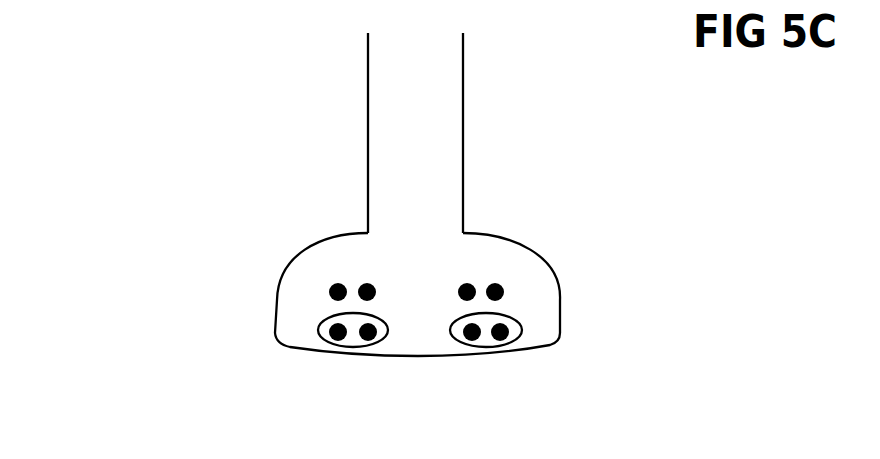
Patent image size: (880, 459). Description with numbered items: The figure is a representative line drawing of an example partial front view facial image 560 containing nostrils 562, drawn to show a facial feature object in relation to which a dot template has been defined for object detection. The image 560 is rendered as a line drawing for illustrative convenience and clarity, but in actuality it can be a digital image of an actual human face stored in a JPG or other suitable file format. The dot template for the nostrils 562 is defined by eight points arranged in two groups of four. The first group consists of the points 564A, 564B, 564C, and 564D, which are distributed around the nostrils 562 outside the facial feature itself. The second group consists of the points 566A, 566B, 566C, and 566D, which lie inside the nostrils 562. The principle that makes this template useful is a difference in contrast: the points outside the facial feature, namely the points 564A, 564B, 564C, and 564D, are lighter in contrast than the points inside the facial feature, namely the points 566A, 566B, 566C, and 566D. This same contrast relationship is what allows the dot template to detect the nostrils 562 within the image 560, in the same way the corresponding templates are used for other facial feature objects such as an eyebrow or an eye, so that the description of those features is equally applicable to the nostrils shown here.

The partial front view facial image 560 is at (208, 377).
The nostrils 562 is at (450, 331).
The point 564A is at (329, 292).
The point 564B is at (405, 257).
The point 564C is at (460, 289).
The point 564D is at (500, 291).
The point 566A is at (338, 340).
The point 566B is at (368, 340).
The point 566C is at (472, 340).
The point 566D is at (500, 340).